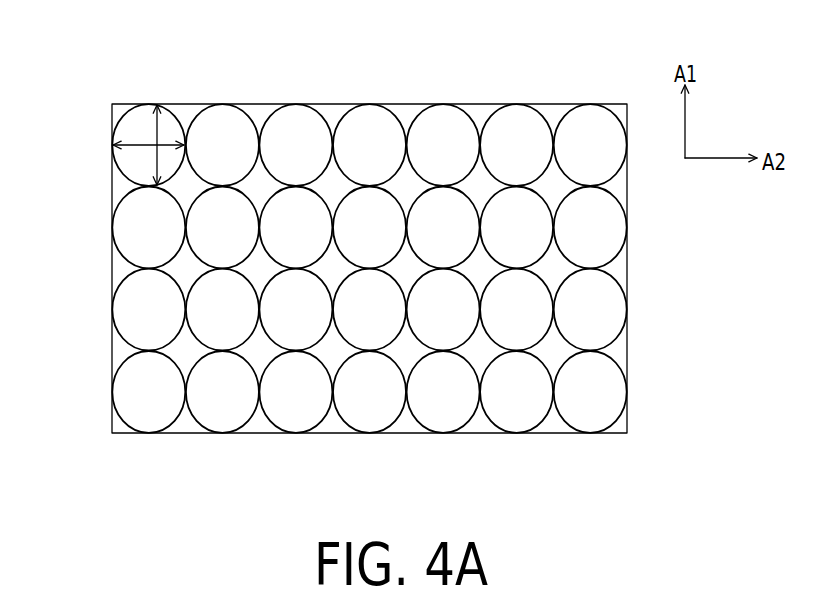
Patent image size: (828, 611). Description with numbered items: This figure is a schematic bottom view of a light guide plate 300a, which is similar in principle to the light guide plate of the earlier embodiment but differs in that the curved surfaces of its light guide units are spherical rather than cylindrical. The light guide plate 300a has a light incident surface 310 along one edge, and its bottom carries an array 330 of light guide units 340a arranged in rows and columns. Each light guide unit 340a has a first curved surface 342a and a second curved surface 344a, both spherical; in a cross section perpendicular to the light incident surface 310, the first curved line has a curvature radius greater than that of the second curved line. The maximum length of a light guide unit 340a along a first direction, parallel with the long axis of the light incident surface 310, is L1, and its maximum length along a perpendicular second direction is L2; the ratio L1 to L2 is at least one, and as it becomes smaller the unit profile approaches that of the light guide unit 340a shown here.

The light guide plate 300a is at (745, 472).
The light incident surface 310 is at (112, 268).
The microlens array 330 is at (615, 268).
The light guide unit 340a is at (170, 122).
The first curved surface 342a is at (121, 172).
The second curved surface 344a is at (178, 173).
The maximum length along the first direction L1 is at (157, 125).
The maximum length along the second direction L2 is at (132, 142).